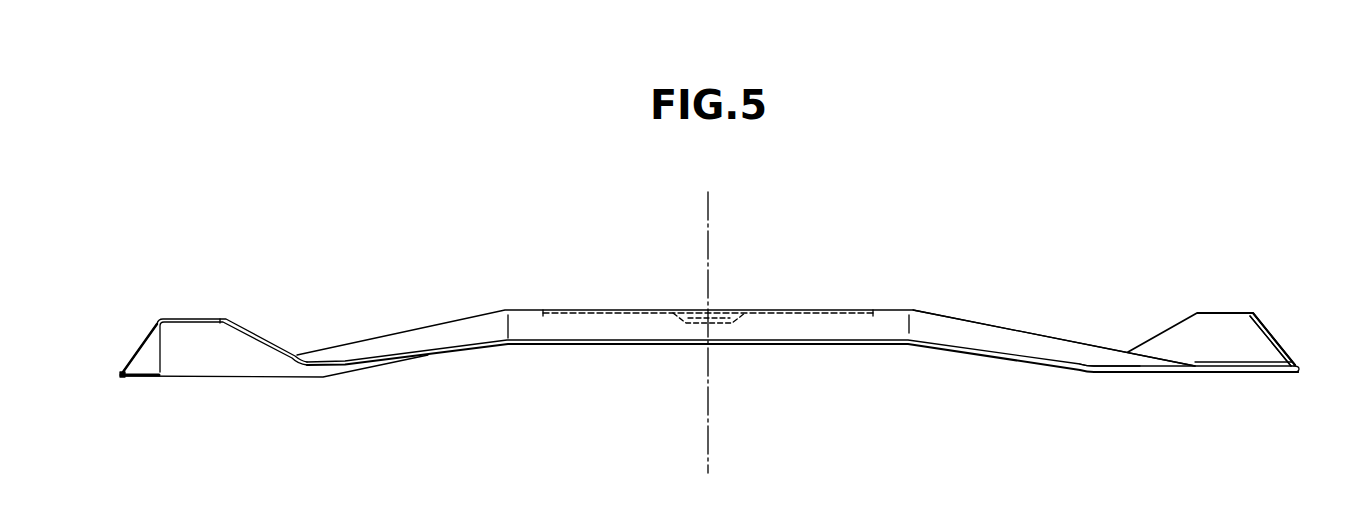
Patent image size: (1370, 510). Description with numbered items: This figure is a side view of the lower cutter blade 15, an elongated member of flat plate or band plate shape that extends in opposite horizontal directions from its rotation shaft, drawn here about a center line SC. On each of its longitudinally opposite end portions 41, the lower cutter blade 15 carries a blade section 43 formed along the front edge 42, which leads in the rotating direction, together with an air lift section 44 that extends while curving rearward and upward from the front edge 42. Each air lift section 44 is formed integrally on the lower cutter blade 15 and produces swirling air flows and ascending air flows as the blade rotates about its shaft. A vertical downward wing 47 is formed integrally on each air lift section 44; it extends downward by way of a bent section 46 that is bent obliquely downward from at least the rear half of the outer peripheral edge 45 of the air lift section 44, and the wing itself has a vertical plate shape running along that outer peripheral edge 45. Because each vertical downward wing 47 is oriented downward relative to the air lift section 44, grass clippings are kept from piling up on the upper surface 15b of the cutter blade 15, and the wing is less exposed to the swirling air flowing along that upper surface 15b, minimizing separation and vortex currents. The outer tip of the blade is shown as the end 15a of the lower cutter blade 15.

The lower cutter blade 15 is at (260, 148).
The end portion 15a is at (1298, 368).
The upper surface 15b is at (1037, 357).
The end portion 41 is at (325, 350).
The front edge 42 is at (1123, 372).
The blade section 43 is at (1265, 373).
The air lift section 44 is at (207, 335).
The outer peripheral edge 45 is at (1262, 312).
The bent section 46 is at (158, 320).
The vertical downward wing 47 is at (142, 363).
The center line SC is at (708, 210).